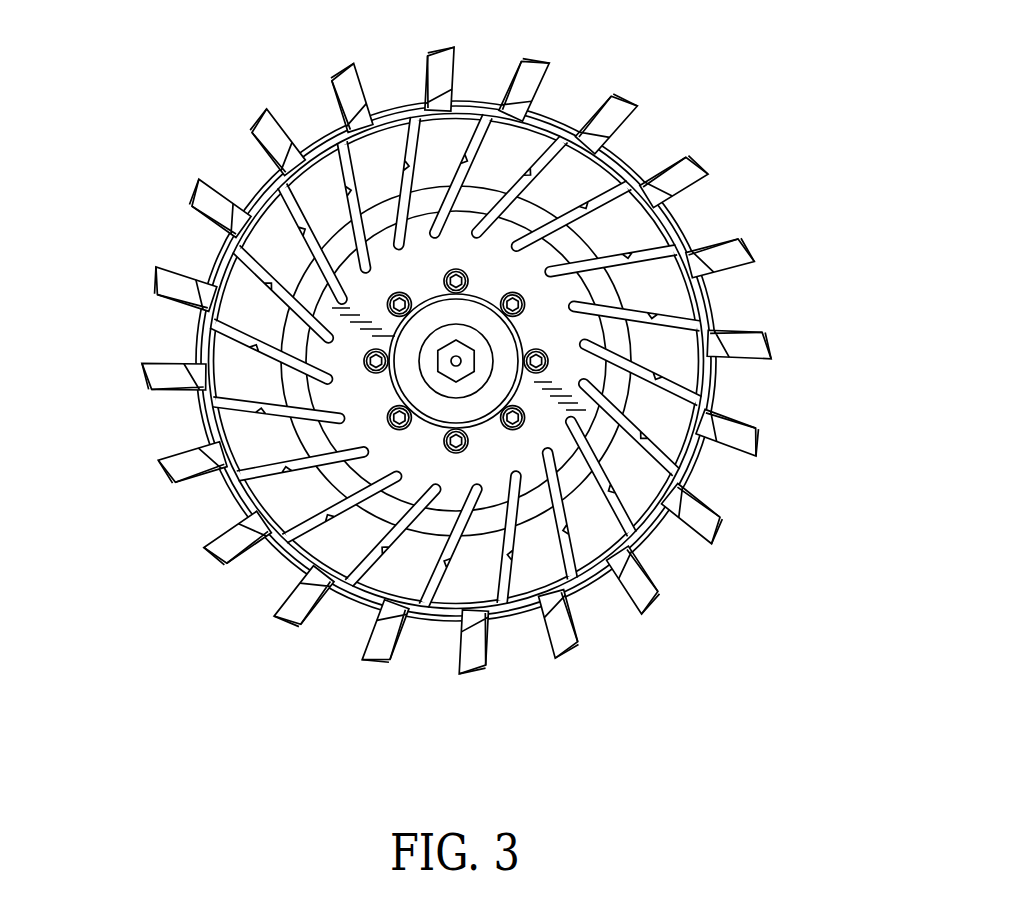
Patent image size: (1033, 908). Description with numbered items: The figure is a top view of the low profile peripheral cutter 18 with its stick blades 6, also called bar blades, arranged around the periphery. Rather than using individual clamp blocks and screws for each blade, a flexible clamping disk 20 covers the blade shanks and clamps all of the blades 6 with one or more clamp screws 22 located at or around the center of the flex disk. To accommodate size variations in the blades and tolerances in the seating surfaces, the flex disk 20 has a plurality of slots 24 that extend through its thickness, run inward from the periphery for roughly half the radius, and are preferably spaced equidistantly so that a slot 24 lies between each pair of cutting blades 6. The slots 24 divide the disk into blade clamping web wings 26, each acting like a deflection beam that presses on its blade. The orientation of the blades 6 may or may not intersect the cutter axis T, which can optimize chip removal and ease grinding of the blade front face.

The low profile peripheral cutter 18 is at (432, 356).
The flexible clamping disk 20 is at (547, 293).
The clamp screw 22 is at (453, 270).
The slot 24 is at (537, 137).
The blade clamping web wing 26 is at (318, 177).
The stick blade 6 is at (708, 170).
The axis of the cutter T is at (460, 372).